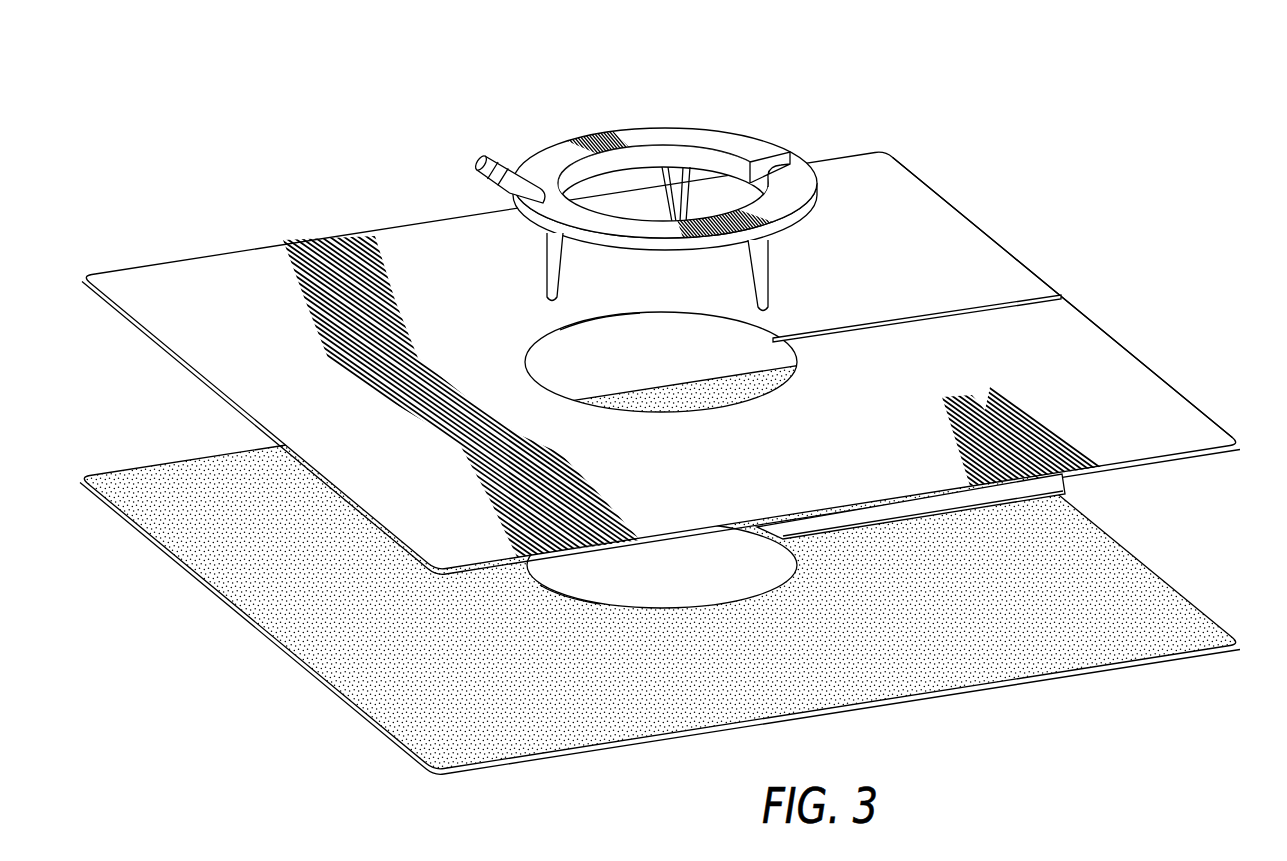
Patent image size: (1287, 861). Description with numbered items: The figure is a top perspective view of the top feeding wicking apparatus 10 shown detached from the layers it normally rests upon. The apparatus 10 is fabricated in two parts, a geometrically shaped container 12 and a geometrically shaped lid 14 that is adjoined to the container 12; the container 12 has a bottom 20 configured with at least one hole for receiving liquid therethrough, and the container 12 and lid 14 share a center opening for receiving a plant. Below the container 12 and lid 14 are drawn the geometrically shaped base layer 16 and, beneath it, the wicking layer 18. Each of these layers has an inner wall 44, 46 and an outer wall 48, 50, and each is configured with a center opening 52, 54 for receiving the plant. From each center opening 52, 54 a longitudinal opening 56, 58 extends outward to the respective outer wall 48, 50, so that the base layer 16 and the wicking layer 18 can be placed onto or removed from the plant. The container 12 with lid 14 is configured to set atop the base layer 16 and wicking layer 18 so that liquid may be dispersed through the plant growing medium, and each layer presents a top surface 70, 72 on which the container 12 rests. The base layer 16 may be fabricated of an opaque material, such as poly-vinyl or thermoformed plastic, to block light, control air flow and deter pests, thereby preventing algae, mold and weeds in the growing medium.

The top feeding wicking apparatus 10 is at (679, 393).
The container 12 is at (657, 213).
The lid 14 is at (548, 138).
The base layer 16 is at (680, 406).
The wicking layer 18 is at (660, 565).
The bottom 20 is at (713, 168).
The inner wall 44 is at (617, 319).
The inner wall 46 is at (573, 602).
The outer wall 48 is at (1177, 390).
The outer wall 50 is at (1127, 672).
The center opening 52 is at (721, 357).
The center opening 54 is at (733, 575).
The longitudinal opening 56 is at (1017, 303).
The longitudinal opening 58 is at (1022, 502).
The top surface 70 is at (198, 344).
The top surface 72 is at (783, 671).